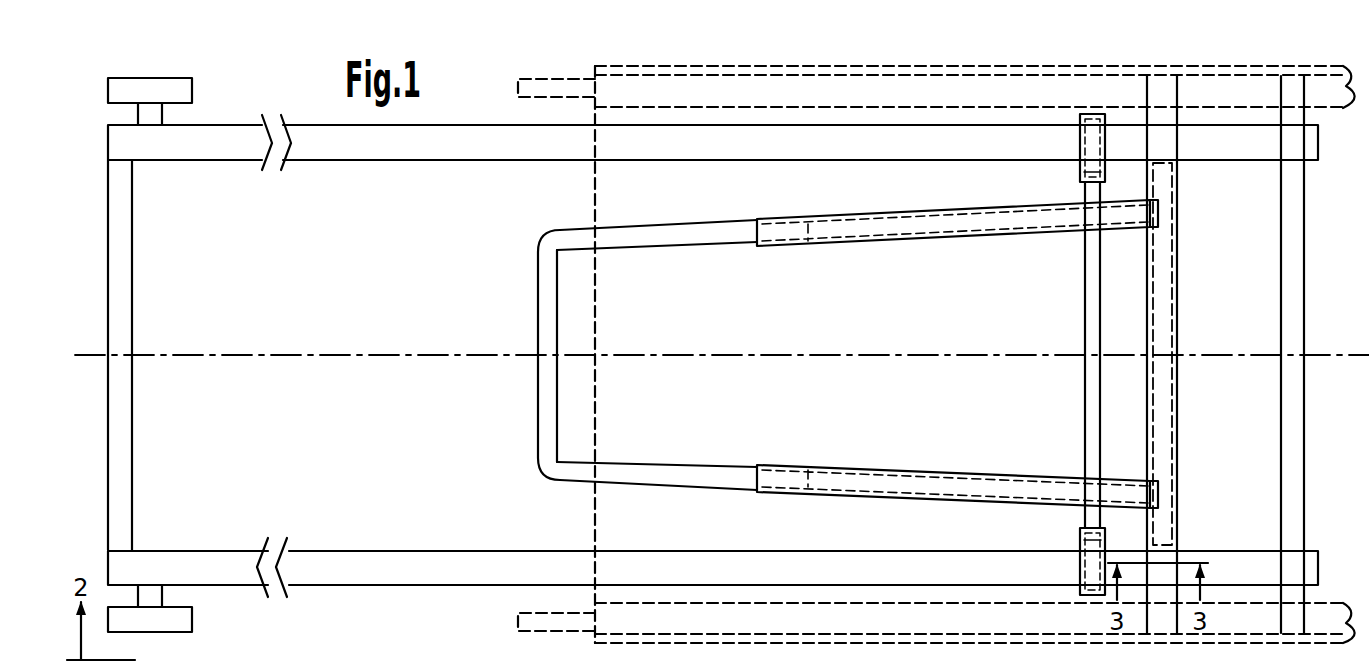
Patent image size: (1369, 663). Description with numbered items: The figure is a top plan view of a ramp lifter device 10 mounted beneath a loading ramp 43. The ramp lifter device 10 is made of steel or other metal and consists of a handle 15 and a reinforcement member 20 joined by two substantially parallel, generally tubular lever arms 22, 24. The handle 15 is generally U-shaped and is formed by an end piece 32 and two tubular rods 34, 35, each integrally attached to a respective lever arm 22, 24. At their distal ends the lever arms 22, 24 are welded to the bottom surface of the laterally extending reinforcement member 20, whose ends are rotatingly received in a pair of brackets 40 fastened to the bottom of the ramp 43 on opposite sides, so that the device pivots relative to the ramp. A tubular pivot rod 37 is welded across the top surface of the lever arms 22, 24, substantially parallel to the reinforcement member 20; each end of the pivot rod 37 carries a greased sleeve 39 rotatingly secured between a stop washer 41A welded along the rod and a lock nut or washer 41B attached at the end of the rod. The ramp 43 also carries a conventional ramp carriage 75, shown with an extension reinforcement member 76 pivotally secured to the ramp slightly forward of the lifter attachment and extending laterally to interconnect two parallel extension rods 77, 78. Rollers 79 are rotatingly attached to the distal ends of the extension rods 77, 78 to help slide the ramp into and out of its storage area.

The ramp lifter device 10 is at (526, 221).
The handle 15 is at (608, 336).
The reinforcement member 20 is at (1178, 308).
The lever arm 22 is at (870, 232).
The lever arm 24 is at (908, 483).
The end piece 32 is at (540, 322).
The tubular rod 34 is at (625, 233).
The tubular rod 35 is at (625, 466).
The pivot rod 37 is at (1082, 275).
The greased sleeve 39 is at (1090, 172).
The bracket 40 is at (1207, 354).
The stop washer 41A is at (1086, 183).
The lock nut or washer 41B is at (1095, 118).
The loading ramp 43 is at (884, 61).
The ramp carriage 75 is at (447, 121).
The extension reinforcement member 76 is at (1294, 257).
The extension rod 77 is at (707, 157).
The extension rod 78 is at (623, 558).
The roller 79 is at (188, 91).